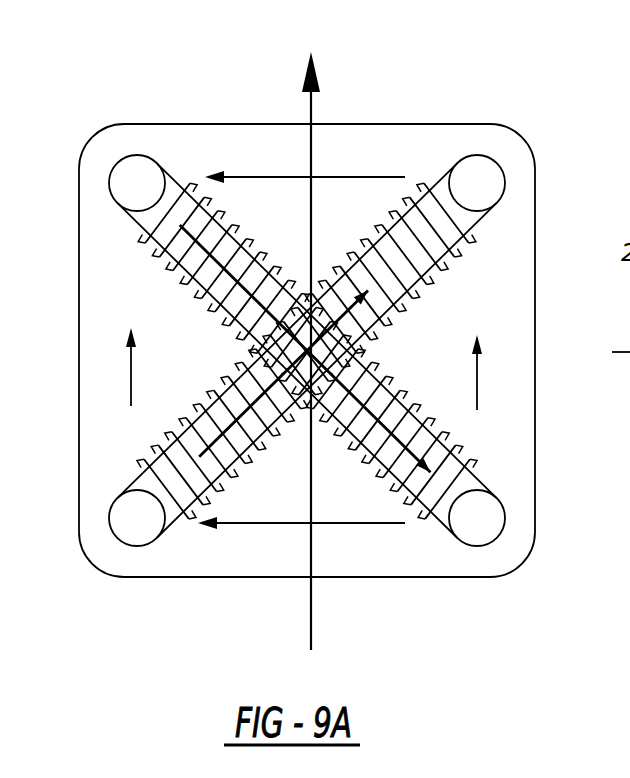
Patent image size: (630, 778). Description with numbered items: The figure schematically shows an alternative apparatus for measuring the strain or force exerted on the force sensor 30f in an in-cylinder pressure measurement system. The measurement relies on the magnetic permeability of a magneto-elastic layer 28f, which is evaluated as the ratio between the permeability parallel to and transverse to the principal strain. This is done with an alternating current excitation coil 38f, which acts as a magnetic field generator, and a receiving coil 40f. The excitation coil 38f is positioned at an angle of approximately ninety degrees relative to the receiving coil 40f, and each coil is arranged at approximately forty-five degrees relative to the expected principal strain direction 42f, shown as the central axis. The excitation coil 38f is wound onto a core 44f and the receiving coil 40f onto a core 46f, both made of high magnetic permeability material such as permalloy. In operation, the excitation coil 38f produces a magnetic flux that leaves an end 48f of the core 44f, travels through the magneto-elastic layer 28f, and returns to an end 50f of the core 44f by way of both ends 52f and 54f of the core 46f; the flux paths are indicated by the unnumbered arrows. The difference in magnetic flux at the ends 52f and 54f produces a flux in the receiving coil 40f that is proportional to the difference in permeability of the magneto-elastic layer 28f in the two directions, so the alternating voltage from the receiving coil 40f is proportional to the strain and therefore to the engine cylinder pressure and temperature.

The magneto-elastic layer 28f is at (508, 258).
The force sensor 30f is at (396, 591).
The AC excitation coil 38f is at (173, 258).
The receiving coil 40f is at (162, 450).
The expected principal strain direction 42f is at (311, 143).
The core 44f is at (355, 418).
The core 46f is at (212, 406).
The end of core 48f is at (478, 527).
The end of core 50f is at (135, 175).
The end of core 52f is at (477, 172).
The end of core 54f is at (138, 522).